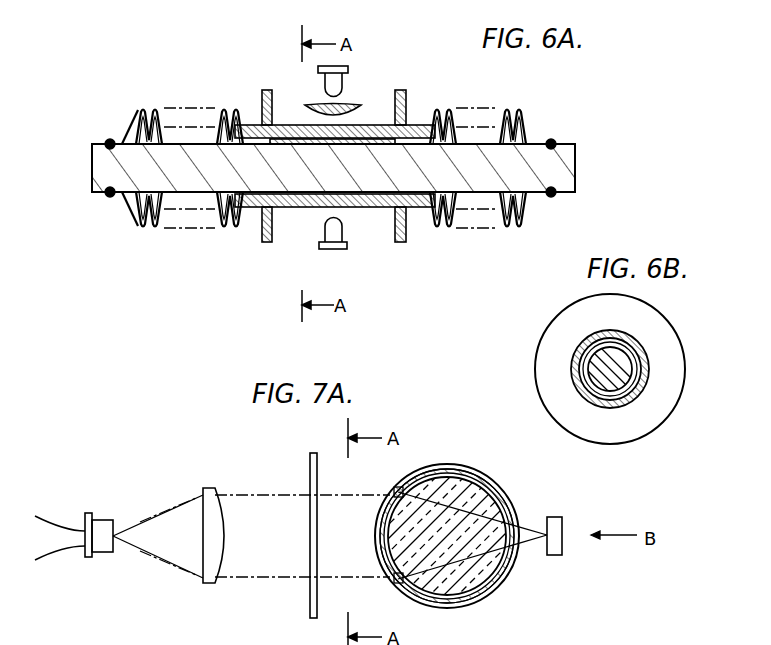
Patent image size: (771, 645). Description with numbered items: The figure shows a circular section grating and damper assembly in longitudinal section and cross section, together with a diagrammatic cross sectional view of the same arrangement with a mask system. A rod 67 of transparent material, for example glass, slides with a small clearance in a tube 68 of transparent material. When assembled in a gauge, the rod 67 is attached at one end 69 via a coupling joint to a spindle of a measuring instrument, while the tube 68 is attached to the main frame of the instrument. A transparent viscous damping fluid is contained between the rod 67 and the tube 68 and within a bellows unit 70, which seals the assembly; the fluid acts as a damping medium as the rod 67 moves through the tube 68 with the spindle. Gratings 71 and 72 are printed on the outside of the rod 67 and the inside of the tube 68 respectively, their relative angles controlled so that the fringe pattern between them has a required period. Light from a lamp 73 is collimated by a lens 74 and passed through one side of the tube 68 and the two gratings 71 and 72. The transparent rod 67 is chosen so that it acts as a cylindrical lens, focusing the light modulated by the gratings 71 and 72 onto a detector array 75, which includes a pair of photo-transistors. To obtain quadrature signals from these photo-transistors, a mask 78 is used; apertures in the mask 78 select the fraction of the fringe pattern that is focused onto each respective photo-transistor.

In FIG. 6A, the rod 67 is at (576, 160).
In FIG. 6B, the rod 67 is at (590, 367).
In FIG. 7A, the rod 67 is at (478, 508).
In FIG. 6A, the tube 68 is at (335, 162).
In FIG. 6B, the tube 68 is at (648, 360).
In FIG. 7A, the tube 68 is at (464, 466).
In FIG. 6A, the end 69 is at (92, 152).
In FIG. 6A, the bellows unit 70 is at (130, 127).
In FIG. 6A, the grating 71 is at (393, 152).
In FIG. 6A, the grating 72 is at (368, 137).
In FIG. 6A, the lamp 73 is at (345, 86).
In FIG. 7A, the lamp 73 is at (107, 523).
In FIG. 6A, the lens 74 is at (310, 108).
In FIG. 7A, the lens 74 is at (200, 500).
In FIG. 6A, the detector array 75 is at (330, 225).
In FIG. 7A, the detector array 75 is at (564, 512).
In FIG. 7A, the mask 78 is at (310, 468).